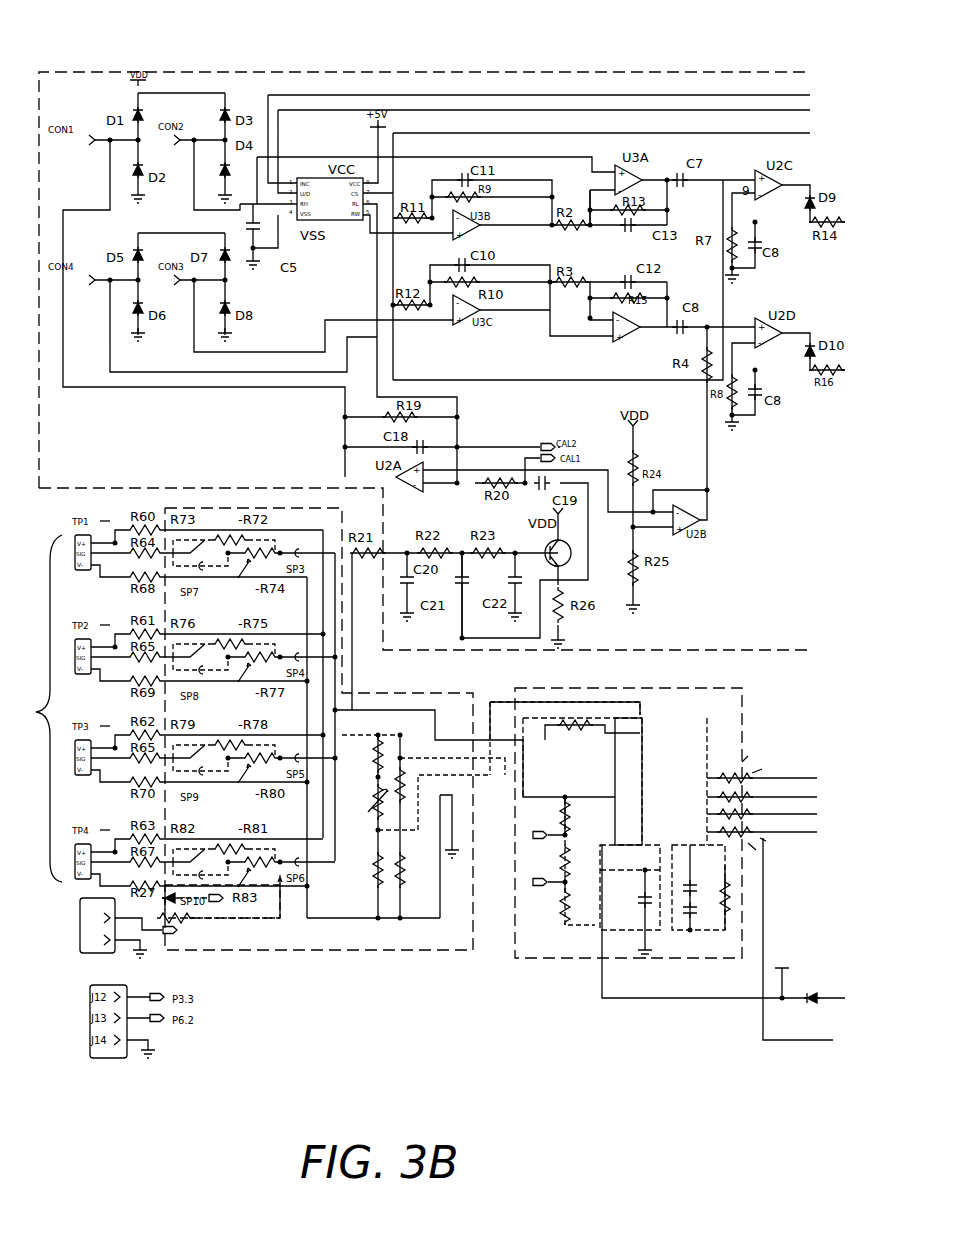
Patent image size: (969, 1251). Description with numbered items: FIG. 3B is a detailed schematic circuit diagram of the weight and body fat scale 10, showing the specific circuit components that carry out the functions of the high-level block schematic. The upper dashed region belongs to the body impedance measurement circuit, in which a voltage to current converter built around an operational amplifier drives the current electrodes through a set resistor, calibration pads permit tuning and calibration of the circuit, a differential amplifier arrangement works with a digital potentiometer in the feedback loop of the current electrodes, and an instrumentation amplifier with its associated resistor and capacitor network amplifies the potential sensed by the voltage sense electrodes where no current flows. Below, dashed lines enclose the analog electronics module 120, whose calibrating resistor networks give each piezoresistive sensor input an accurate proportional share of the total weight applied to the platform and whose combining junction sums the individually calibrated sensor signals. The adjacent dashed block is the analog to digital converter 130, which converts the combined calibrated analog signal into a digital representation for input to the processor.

The body fat scale 10 is at (100, 65).
The analog electronics module 120 is at (363, 975).
The analog to digital converter 130 is at (662, 980).